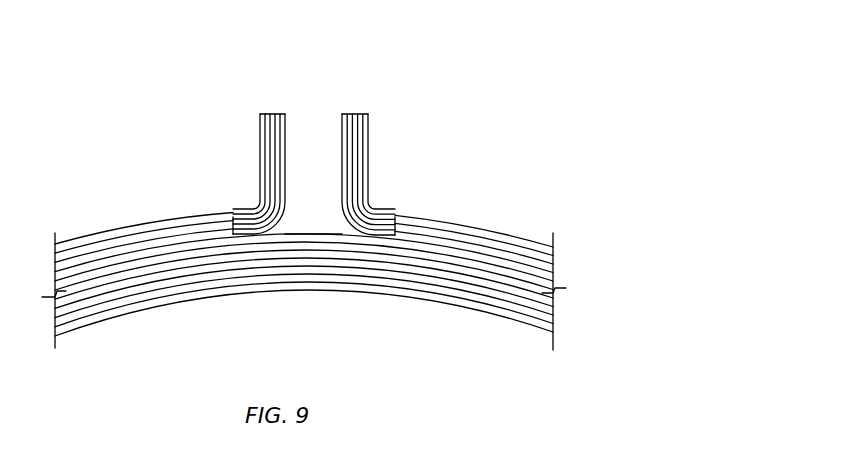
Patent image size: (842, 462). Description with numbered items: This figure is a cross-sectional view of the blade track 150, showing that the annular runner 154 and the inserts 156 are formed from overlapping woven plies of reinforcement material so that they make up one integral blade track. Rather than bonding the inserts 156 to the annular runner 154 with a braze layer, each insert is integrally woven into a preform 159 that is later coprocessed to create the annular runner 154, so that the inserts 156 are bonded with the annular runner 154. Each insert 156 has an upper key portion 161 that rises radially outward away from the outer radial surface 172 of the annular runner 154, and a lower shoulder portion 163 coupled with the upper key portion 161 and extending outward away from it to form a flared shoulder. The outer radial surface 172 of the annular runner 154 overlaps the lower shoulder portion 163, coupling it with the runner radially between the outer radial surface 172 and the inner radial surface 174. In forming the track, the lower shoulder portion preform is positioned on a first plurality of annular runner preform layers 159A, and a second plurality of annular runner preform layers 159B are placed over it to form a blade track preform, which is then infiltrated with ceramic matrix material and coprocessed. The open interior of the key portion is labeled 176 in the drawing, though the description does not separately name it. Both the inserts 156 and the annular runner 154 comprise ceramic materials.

The blade track 150 is at (410, 78).
The annular runner 154 is at (503, 230).
The inserts 156 is at (259, 133).
The preform 159 is at (148, 265).
The first plurality of annular runner preform layers 159A is at (374, 246).
The second plurality of annular runner preform layers 159B is at (382, 209).
The upper key portion 161 is at (259, 152).
The lower shoulder portion 163 is at (245, 212).
The outer radial surface 172 is at (452, 222).
The inner radial surface 174 is at (530, 327).
The boss cavity 176 is at (308, 147).